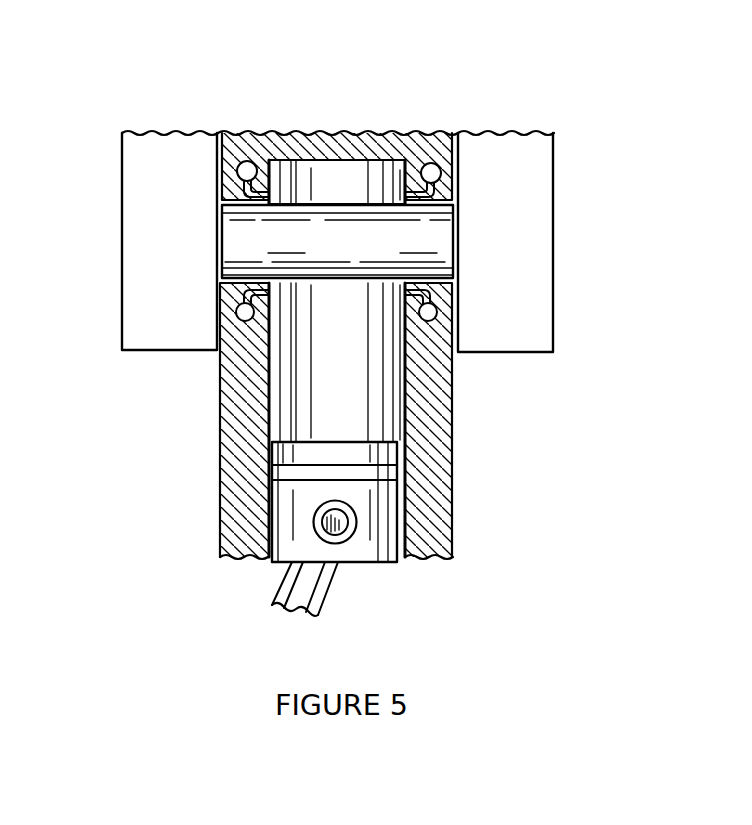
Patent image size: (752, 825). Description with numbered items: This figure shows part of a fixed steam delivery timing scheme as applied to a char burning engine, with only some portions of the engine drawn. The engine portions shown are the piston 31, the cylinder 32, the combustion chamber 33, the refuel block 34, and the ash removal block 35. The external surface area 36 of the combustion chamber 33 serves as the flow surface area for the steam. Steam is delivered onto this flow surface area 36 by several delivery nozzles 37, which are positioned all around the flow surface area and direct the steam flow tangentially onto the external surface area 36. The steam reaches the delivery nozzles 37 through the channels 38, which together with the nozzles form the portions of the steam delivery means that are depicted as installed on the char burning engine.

The piston 31 is at (367, 510).
The cylinder 32 is at (300, 403).
The combustion chamber 33 is at (358, 245).
The refuel block 34 is at (122, 227).
The ash removal block 35 is at (555, 155).
The external surface area 36 is at (322, 200).
The delivery nozzles 37 is at (283, 160).
The channels 38 is at (242, 163).